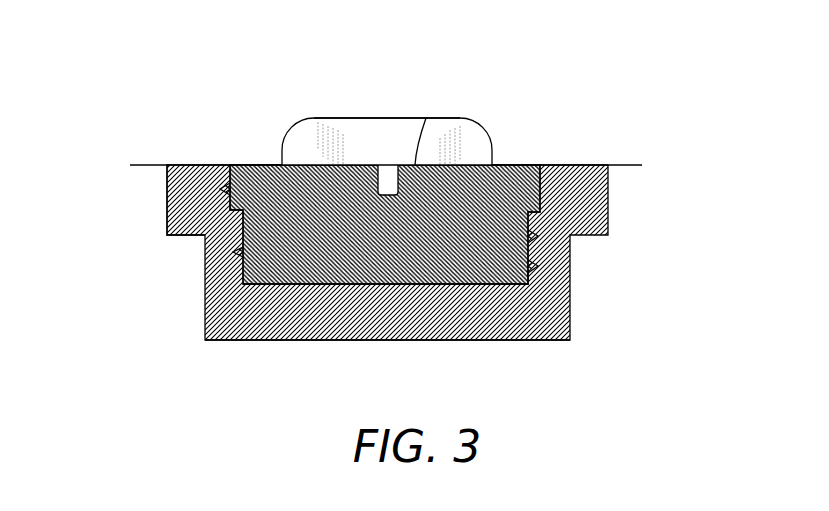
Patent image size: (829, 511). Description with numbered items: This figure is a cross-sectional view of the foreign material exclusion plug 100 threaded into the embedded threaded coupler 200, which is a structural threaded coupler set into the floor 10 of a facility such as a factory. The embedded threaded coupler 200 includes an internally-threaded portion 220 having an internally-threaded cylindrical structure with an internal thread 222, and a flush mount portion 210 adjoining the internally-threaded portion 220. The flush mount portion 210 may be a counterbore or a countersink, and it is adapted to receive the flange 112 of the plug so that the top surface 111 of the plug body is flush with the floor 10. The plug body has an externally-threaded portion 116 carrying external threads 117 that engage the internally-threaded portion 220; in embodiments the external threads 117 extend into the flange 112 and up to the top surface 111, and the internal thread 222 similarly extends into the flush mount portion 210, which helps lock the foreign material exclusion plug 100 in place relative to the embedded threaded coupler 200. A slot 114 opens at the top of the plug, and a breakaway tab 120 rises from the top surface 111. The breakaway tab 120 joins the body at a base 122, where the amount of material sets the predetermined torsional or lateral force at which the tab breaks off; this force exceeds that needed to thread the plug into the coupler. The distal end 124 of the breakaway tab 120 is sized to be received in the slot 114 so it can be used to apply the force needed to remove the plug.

The floor 10 is at (147, 165).
The foreign material exclusion plug 100 is at (514, 130).
The top surface 111 is at (471, 152).
The flange 112 is at (238, 178).
The slot 114 is at (388, 190).
The externally-threaded portion 116 is at (513, 240).
The external threads 117 is at (531, 266).
The breakaway tab 120 is at (357, 137).
The base 122 is at (426, 118).
The distal end 124 is at (397, 117).
The embedded threaded coupler 200 is at (606, 145).
The flush mount portion 210 is at (185, 212).
The internally-threaded portion 220 is at (543, 305).
The internal thread 222 is at (532, 282).